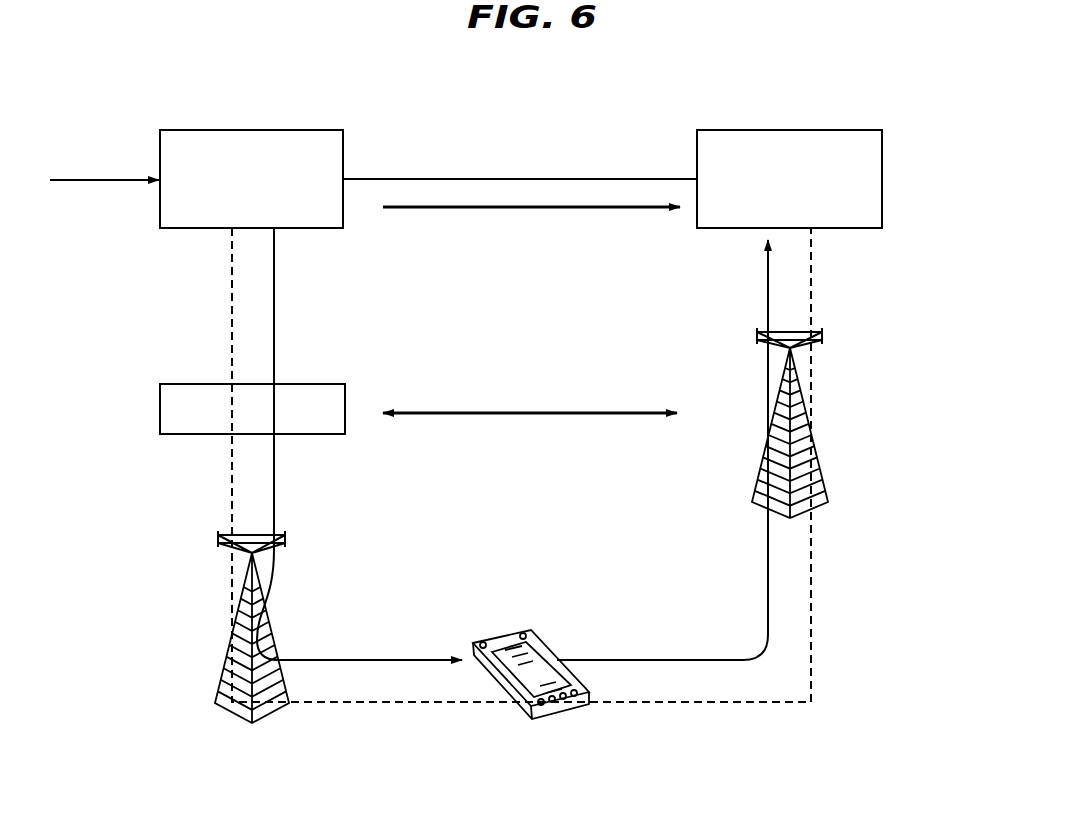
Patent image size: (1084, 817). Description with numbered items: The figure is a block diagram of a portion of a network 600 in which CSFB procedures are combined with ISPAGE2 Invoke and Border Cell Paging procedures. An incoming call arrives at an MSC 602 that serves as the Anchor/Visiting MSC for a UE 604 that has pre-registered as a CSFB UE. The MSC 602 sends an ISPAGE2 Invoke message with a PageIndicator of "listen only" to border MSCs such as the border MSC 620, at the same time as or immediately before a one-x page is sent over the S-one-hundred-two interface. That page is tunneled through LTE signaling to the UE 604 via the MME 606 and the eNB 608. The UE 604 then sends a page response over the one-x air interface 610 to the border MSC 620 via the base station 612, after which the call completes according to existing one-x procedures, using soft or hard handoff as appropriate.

The network 600 is at (184, 80).
The MSC 602 is at (290, 129).
The UE 604 is at (533, 628).
The MME 606 is at (290, 385).
The eNB 608 is at (222, 670).
The 1x air interface 610 is at (767, 590).
The base station 612 is at (820, 462).
The border MSC 620 is at (823, 130).